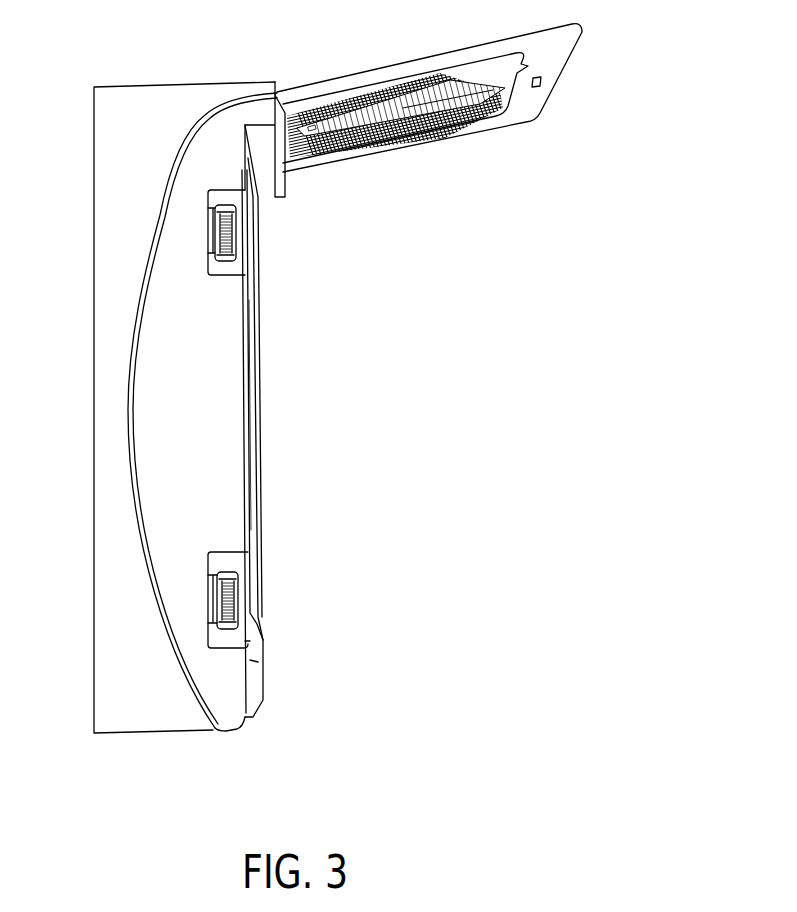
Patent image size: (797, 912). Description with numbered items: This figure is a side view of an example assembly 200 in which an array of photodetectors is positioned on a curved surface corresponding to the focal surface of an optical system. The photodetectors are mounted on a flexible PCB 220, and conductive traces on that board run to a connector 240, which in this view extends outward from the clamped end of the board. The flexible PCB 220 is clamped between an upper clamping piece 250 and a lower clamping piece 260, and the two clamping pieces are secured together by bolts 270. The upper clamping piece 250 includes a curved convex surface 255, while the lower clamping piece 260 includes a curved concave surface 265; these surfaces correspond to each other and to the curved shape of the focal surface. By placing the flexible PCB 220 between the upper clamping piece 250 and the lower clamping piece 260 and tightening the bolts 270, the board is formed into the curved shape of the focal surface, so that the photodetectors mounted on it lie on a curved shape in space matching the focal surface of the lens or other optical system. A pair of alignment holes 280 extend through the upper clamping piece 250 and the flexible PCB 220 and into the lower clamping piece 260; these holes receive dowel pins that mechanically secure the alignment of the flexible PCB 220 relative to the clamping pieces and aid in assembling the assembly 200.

The assembly 200 is at (710, 410).
The flexible PCB 220 is at (136, 442).
The connector 240 is at (455, 112).
The upper clamping piece 250 is at (250, 517).
The curved convex surface 255 is at (135, 392).
The lower clamping piece 260 is at (94, 514).
The curved concave surface 265 is at (123, 408).
The bolts 270 is at (236, 234).
The alignment holes 280 is at (255, 414).